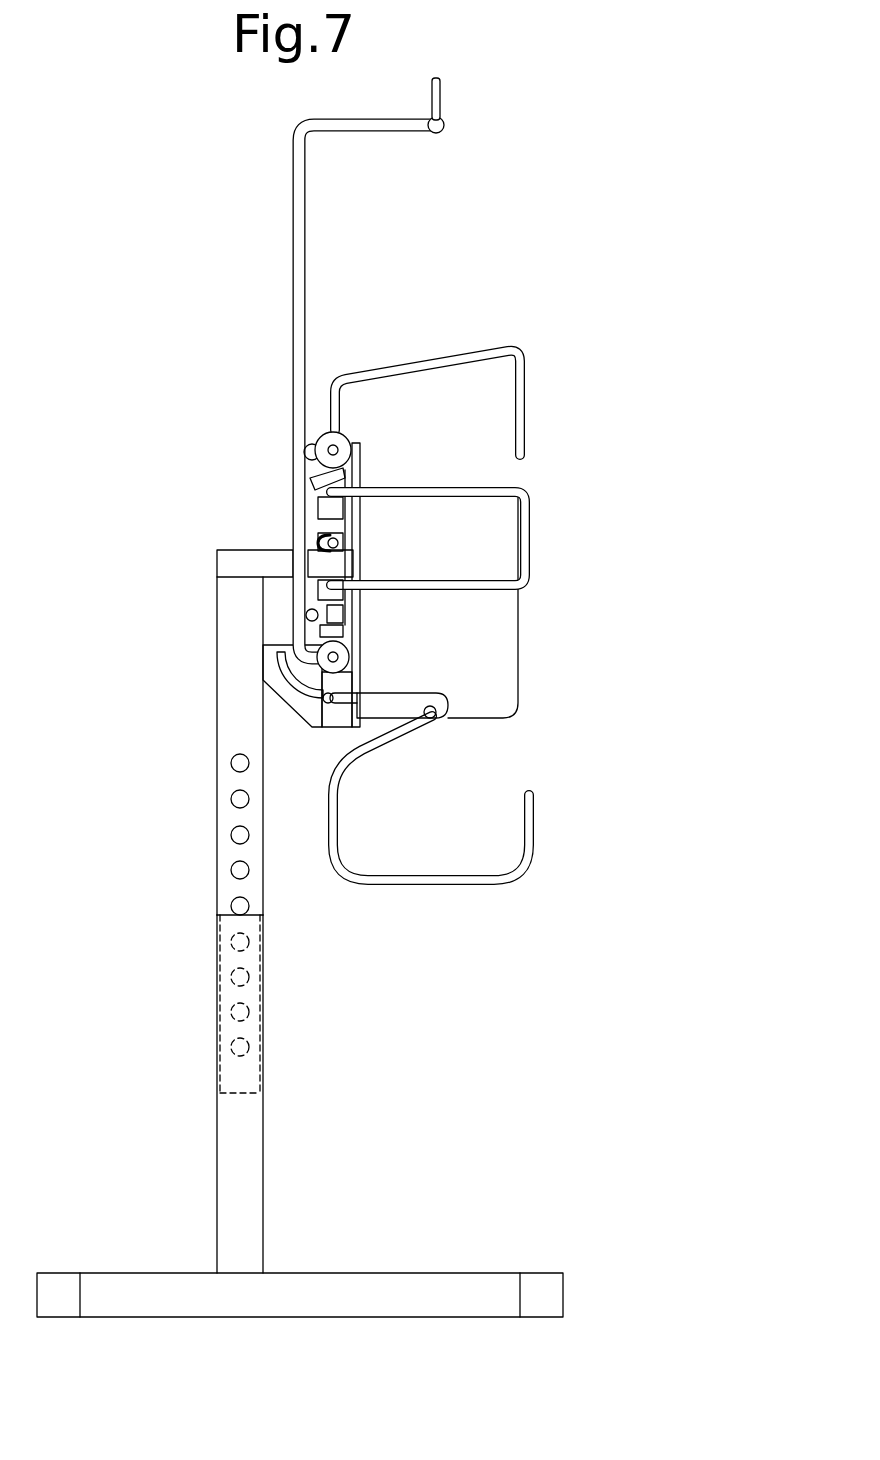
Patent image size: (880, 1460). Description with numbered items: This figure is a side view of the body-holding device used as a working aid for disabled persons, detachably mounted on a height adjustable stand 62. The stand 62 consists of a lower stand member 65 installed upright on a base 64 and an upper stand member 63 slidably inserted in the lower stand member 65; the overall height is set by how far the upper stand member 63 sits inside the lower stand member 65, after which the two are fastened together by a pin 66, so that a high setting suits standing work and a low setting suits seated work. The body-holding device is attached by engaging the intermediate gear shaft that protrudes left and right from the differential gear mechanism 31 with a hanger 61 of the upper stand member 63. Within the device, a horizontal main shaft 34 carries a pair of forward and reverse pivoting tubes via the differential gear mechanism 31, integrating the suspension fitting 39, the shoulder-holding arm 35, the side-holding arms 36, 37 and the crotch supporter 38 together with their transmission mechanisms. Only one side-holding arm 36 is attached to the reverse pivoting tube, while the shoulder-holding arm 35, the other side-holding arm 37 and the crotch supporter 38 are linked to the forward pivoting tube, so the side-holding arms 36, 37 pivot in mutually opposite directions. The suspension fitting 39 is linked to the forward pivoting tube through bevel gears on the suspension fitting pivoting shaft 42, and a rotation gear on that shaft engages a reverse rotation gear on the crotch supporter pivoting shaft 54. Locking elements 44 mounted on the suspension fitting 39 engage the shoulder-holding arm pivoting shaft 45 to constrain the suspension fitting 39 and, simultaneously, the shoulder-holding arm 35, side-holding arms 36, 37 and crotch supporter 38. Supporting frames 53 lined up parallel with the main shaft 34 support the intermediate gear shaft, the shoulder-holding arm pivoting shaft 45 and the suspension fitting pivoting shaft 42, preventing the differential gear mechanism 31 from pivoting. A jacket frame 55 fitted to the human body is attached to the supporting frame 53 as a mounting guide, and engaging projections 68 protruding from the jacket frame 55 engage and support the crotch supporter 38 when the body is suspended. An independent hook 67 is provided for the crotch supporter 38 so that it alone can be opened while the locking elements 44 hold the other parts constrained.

The differential gear mechanism 31 is at (313, 543).
The main shaft 34 is at (313, 510).
The shoulder-holding arm 35 is at (520, 345).
The side-holding arm 36 is at (491, 538).
The side-holding arm 37 is at (528, 532).
The crotch supporter 38 is at (340, 805).
The suspension fitting 39 is at (293, 178).
The suspension fitting pivoting shaft 42 is at (325, 641).
The locking elements 44 is at (315, 438).
The shoulder-holding arm pivoting shaft 45 is at (330, 446).
The supporting frame 53 is at (362, 463).
The crotch supporter pivoting shaft 54 is at (328, 703).
The jacket frame 55 is at (490, 635).
The hanger 61 is at (345, 563).
The height adjustable stand 62 is at (277, 1001).
The upper stand member 63 is at (222, 708).
The base 64 is at (358, 1273).
The lower stand member 65 is at (215, 1153).
The pin 66 is at (235, 912).
The independent hook 67 is at (325, 697).
The engaging projections 68 is at (438, 716).